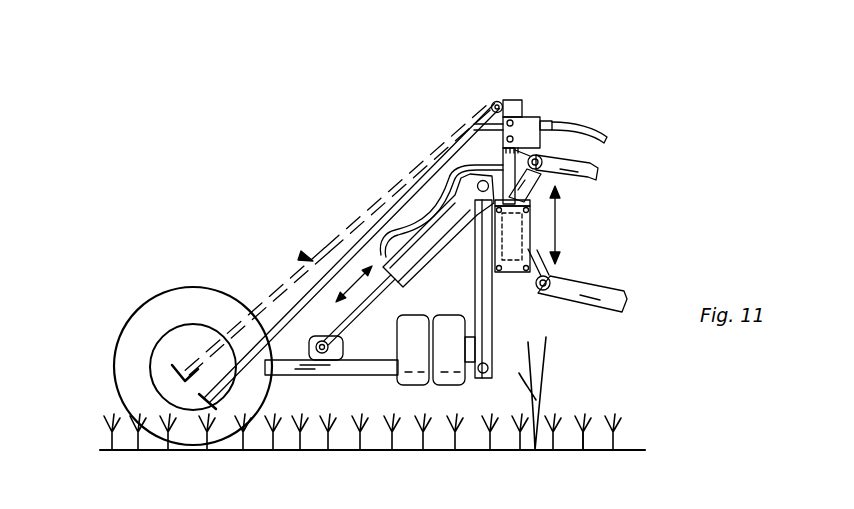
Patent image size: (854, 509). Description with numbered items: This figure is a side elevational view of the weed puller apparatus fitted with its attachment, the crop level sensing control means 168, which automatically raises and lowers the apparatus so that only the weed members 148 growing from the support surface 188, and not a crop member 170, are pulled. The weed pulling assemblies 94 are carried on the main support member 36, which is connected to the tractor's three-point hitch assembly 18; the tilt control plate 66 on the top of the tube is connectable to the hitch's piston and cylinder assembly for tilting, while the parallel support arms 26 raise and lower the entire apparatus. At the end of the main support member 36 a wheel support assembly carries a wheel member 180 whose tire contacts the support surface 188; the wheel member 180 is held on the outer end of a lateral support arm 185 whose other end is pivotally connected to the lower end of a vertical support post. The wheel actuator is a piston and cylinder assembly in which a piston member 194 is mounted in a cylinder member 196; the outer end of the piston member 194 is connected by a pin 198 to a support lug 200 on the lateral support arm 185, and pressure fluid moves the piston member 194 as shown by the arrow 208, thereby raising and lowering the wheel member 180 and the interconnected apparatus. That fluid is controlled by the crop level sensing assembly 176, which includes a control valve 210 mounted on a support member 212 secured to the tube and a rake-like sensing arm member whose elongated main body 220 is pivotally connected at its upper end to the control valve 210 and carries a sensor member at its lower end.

The crop level sensing assembly 176 is at (509, 90).
The control valve 210 is at (530, 122).
The support member 212 is at (448, 150).
The tilt control plate 66 is at (575, 158).
The three-point hitch assembly 18 is at (590, 178).
The main support member 36 is at (531, 239).
The support arms 26 is at (615, 285).
The main body 220 is at (337, 243).
The crop level sensing control means 168 is at (304, 256).
The arrow 208 is at (300, 280).
The pin 198 is at (310, 338).
The cylinder member 196 is at (437, 247).
The piston member 194 is at (391, 297).
The support lug 200 is at (338, 350).
The wheel member 180 is at (125, 348).
The lateral support arm 185 is at (340, 370).
The crop member 170 is at (585, 440).
The support surface 188 is at (641, 450).
The weed pulling assemblies 94 is at (410, 398).
The weed members 148 is at (535, 446).